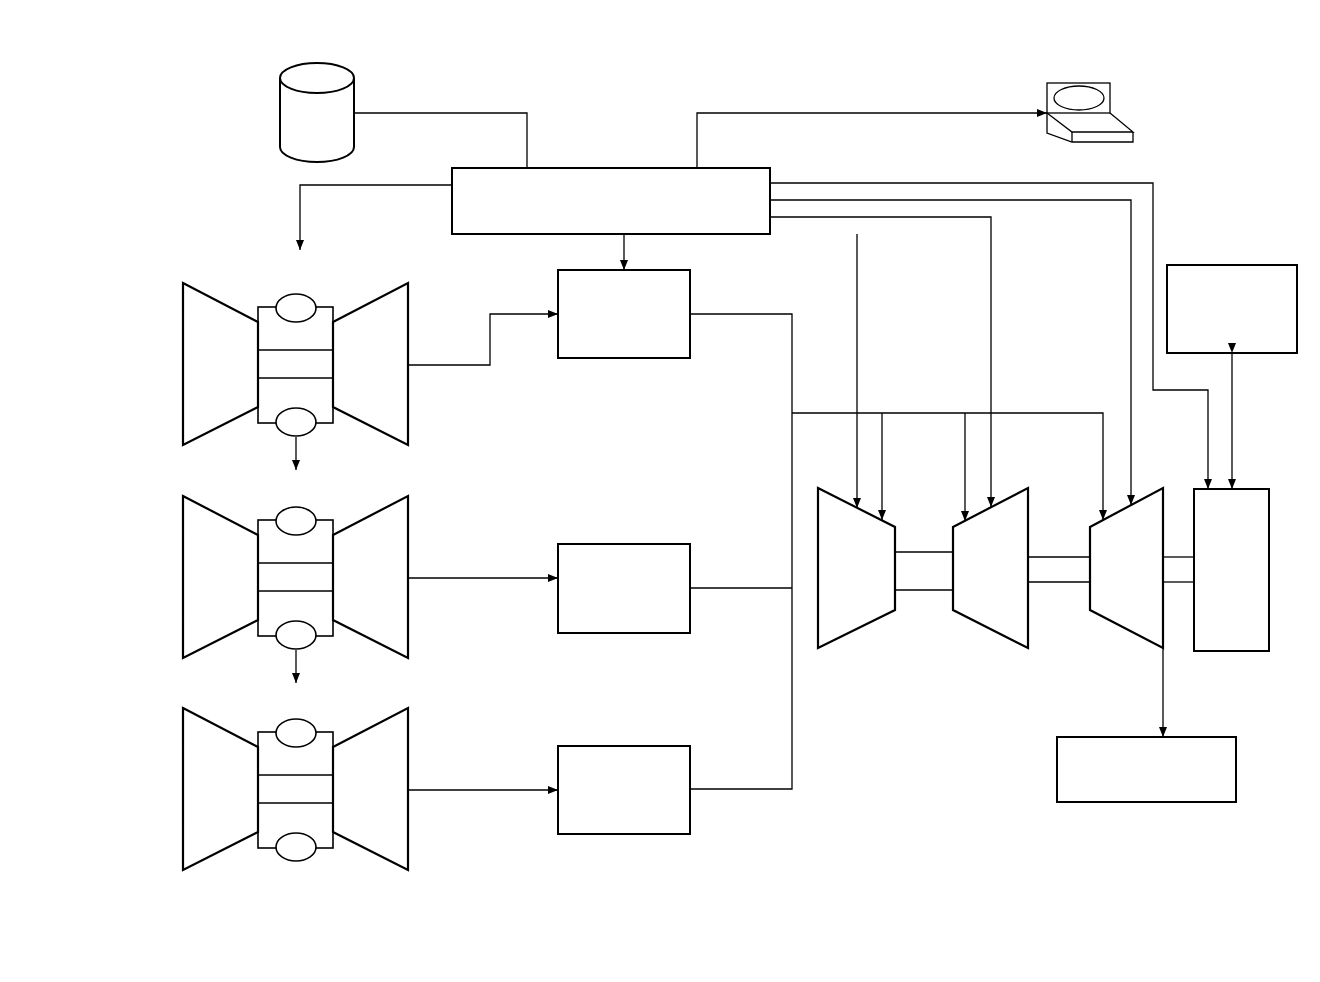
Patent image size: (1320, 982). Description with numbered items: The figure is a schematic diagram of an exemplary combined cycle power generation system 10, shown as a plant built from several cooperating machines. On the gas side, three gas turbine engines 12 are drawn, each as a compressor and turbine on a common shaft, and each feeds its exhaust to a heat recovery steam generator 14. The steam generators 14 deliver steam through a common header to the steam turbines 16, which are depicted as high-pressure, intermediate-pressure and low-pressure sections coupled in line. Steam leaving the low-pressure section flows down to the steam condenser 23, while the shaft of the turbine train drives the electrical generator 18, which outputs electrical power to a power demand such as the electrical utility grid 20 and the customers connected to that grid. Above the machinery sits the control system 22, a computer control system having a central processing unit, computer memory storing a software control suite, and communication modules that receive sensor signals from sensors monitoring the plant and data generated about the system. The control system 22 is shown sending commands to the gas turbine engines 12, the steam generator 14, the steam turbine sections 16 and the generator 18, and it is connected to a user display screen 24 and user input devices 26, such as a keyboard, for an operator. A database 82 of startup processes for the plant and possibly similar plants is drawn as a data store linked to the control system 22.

The combined cycle power generation system 10 is at (886, 726).
The gas turbine engine 12 is at (366, 270).
The heat recovery steam generator 14 is at (656, 349).
The steam turbine 16 is at (857, 628).
The electrical generator 18 is at (1235, 642).
The electrical utility grid 20 is at (1230, 265).
The control system 22 is at (460, 167).
The steam condenser 23 is at (1070, 737).
The user display screen 24 is at (1112, 102).
The user input device 26 is at (1105, 143).
The database 82 is at (280, 120).